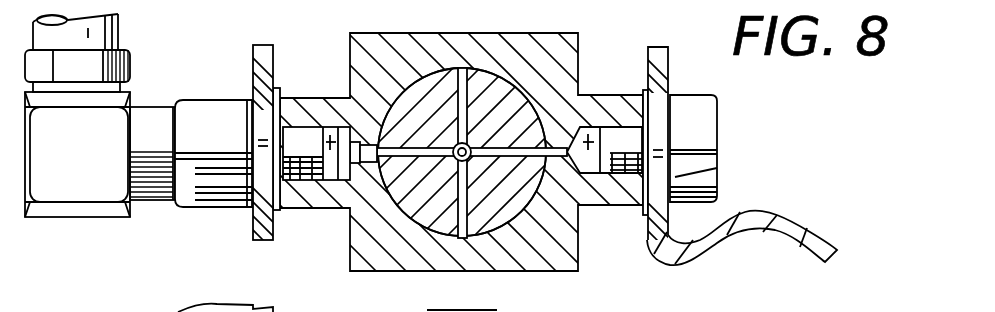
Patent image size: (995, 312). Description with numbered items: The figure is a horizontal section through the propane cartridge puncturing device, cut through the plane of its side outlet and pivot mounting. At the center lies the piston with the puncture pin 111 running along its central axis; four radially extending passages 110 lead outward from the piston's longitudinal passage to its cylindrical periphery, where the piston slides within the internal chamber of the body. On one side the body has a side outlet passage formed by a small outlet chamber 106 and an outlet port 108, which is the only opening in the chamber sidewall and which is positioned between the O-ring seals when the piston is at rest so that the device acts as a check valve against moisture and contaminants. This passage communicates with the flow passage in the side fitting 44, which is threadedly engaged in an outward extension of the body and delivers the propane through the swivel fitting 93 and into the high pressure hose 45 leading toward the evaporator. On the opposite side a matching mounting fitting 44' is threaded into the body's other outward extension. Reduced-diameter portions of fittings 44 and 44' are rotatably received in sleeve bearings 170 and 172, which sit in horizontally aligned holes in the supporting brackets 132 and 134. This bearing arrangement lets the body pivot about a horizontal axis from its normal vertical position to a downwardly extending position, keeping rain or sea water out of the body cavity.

The side fitting 44 is at (191, 183).
The mounting fitting 44' is at (734, 147).
The high pressure hose 45 is at (108, 33).
The swivel fitting 93 is at (55, 218).
The outlet chamber 106 is at (337, 180).
The outlet port 108 is at (368, 143).
The passages 110 is at (472, 138).
The puncture pin 111 is at (452, 153).
The supporting bracket 132 is at (255, 60).
The supporting bracket 134 is at (808, 215).
The sleeve bearing 170 is at (262, 128).
The sleeve bearing 172 is at (657, 177).